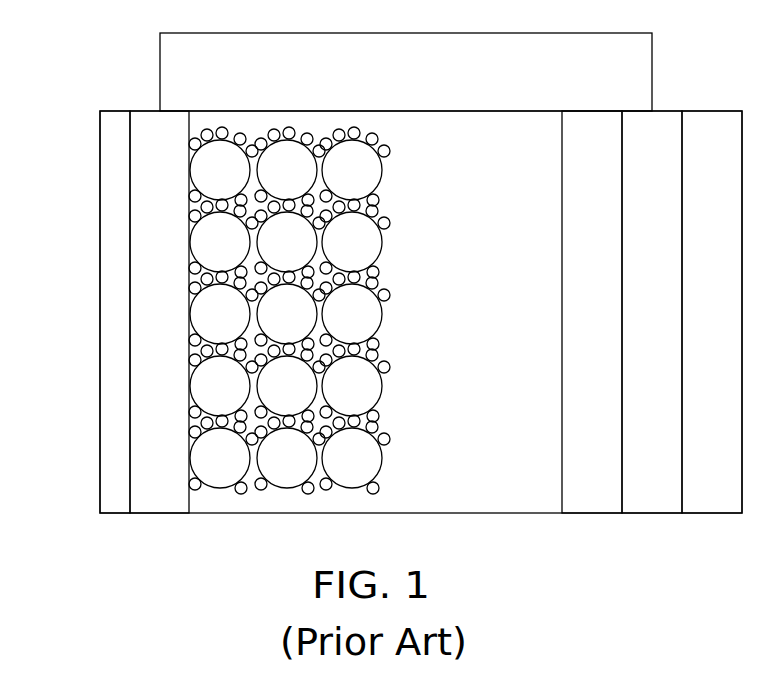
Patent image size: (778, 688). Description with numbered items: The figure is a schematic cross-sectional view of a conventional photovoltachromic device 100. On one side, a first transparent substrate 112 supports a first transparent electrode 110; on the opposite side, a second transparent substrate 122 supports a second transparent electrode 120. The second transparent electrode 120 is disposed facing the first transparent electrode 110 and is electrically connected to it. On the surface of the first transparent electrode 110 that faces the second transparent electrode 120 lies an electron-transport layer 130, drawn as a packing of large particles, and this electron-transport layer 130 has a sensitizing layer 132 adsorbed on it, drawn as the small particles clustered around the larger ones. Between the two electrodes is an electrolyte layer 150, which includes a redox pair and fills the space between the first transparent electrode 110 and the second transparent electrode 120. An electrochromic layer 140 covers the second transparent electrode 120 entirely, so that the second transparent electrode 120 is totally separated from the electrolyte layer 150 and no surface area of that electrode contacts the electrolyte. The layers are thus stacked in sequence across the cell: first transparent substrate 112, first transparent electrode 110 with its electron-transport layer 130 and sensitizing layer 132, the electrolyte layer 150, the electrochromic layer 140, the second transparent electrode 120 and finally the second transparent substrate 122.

The photovoltachromic device 100 is at (57, 63).
The first transparent electrode 110 is at (158, 503).
The first transparent substrate 112 is at (116, 503).
The second transparent electrode 120 is at (653, 503).
The second transparent substrate 122 is at (715, 503).
The electron-transport layer 130 is at (285, 147).
The sensitizing layer 132 is at (352, 140).
The electrochromic layer 140 is at (593, 503).
The electrolyte layer 150 is at (482, 125).